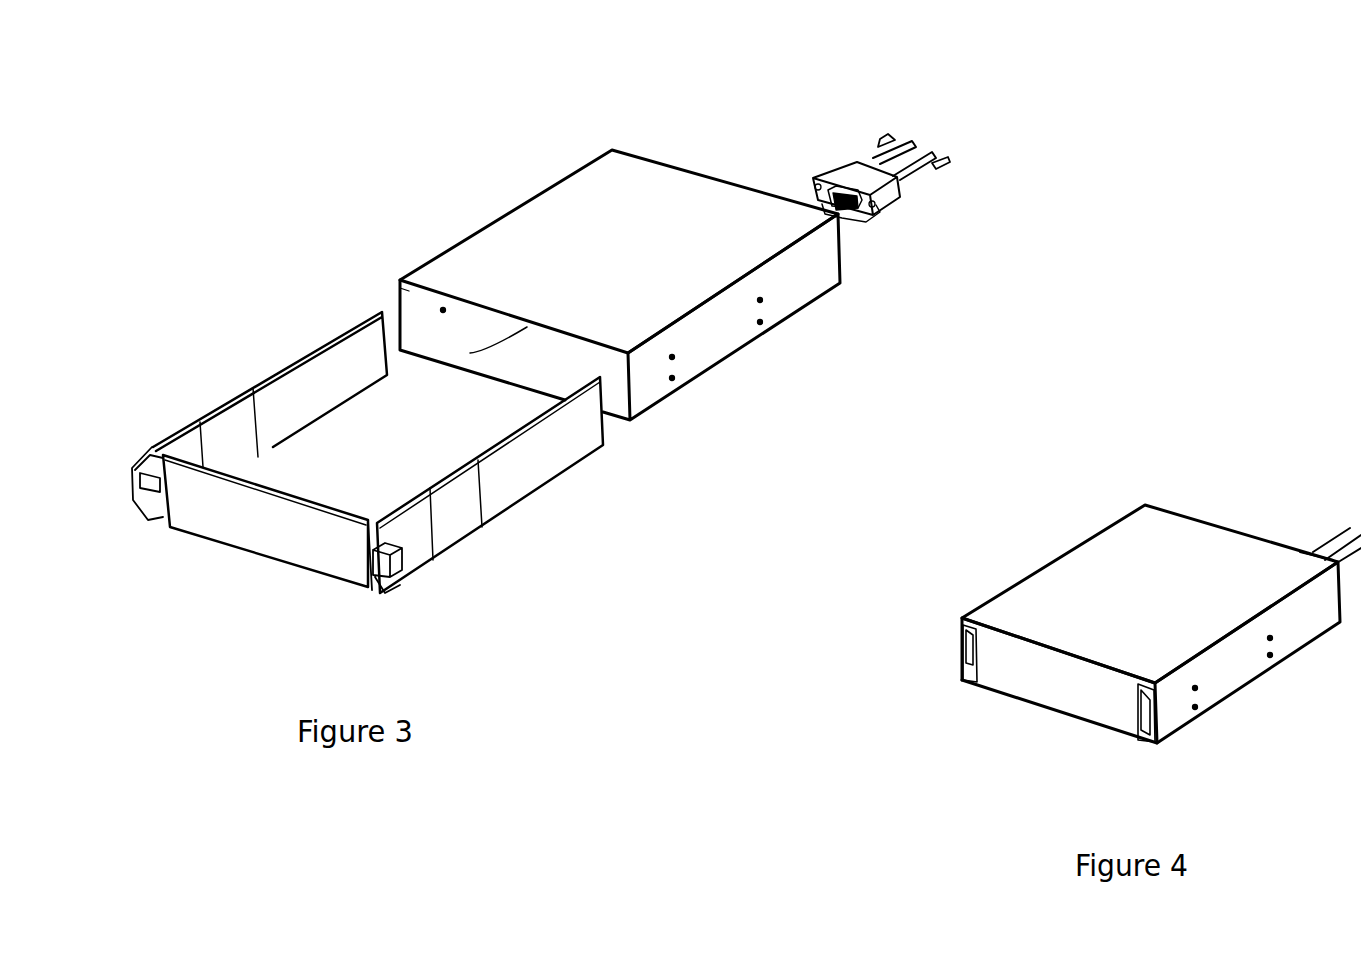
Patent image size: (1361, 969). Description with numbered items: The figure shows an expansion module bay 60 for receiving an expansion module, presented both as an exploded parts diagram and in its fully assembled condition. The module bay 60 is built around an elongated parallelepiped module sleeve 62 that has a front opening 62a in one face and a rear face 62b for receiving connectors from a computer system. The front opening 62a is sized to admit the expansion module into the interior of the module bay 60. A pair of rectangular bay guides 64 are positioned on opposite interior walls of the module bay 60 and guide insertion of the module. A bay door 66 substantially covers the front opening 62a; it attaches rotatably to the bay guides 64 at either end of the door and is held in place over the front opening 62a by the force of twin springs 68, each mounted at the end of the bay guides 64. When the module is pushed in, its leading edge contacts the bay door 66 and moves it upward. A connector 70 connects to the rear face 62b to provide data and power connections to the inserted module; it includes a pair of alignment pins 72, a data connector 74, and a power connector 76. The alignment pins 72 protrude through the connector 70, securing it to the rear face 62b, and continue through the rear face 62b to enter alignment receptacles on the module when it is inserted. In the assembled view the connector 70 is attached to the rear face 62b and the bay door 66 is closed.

In FIG. 3, the expansion module bay 60 is at (331, 193).
In FIG. 4, the expansion module bay 60 is at (863, 706).
In FIG. 3, the module sleeve 62 is at (513, 212).
In FIG. 4, the module sleeve 62 is at (1048, 562).
In FIG. 3, the front opening 62a is at (398, 305).
In FIG. 4, the front opening 62a is at (990, 697).
In FIG. 3, the rear face 62b is at (673, 165).
In FIG. 4, the rear face 62b is at (1203, 523).
In FIG. 3, the bay guides 64 is at (218, 407).
In FIG. 3, the bay door 66 is at (217, 540).
In FIG. 4, the bay door 66 is at (1046, 687).
In FIG. 3, the springs 68 is at (148, 472).
In FIG. 3, the connector 70 is at (813, 127).
In FIG. 4, the connector 70 is at (1303, 553).
In FIG. 3, the alignment pins 72 is at (947, 150).
In FIG. 3, the data connector 74 is at (843, 210).
In FIG. 3, the power connector 76 is at (837, 210).